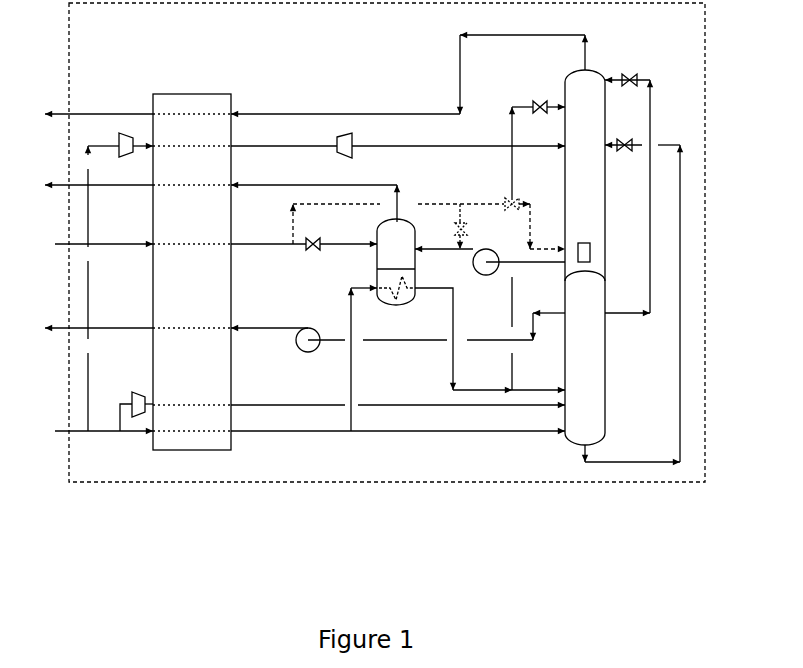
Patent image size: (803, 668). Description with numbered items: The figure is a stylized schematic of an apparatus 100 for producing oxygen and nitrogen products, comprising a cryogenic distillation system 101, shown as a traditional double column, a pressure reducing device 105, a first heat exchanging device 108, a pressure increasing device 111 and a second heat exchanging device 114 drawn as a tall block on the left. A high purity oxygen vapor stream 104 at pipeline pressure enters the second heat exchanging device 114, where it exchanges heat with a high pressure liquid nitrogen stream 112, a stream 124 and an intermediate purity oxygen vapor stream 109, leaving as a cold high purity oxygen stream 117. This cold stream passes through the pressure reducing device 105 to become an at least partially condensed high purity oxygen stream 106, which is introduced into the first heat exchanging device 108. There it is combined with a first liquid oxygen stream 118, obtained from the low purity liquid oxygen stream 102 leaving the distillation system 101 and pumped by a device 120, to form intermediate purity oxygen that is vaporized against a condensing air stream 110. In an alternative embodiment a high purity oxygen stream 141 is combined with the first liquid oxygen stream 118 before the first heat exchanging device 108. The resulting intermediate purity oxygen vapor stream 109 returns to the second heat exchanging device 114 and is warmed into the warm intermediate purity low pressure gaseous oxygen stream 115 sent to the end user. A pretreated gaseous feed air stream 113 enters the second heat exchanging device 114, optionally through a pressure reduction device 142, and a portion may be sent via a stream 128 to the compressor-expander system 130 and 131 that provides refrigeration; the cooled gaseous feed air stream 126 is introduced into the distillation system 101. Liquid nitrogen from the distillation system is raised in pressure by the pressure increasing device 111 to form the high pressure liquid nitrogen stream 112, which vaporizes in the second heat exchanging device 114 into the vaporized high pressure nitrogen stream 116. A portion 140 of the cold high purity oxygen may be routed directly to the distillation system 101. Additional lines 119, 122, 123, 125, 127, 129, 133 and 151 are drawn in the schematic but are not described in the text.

The apparatus 100 is at (72, 80).
The cryogenic distillation system 101 is at (605, 352).
The low purity liquid oxygen stream 102 is at (525, 255).
The high purity oxygen vapor stream 104 is at (87, 244).
The pressure reducing device 105 is at (312, 236).
The at least partially condensed high purity oxygen stream 106 is at (348, 237).
The first heat exchanging device 108 is at (405, 225).
The intermediate purity oxygen vapor stream 109 is at (314, 195).
The condensing air stream 110 is at (365, 352).
The pressure increasing device 111 is at (308, 352).
The high pressure liquid nitrogen stream 112 is at (269, 321).
The gaseous feed air stream 113 is at (91, 431).
The second heat exchanging device 114 is at (192, 284).
The warm intermediate purity low pressure gaseous oxygen stream 115 is at (87, 185).
The vaporized high pressure nitrogen stream 116 is at (87, 328).
The cold high purity oxygen stream 117 is at (367, 224).
The first liquid oxygen stream 118 is at (444, 260).
The separator liquid stream 119 is at (490, 333).
The pump device 120 is at (485, 270).
The column bottoms stream 122 is at (632, 300).
The column side stream 123 is at (493, 207).
The stream 124 is at (408, 74).
The product stream 125 is at (87, 113).
The cooled gaseous feed air stream 126 is at (101, 300).
The column feed stream 127 is at (398, 423).
The stream 128 is at (112, 417).
The compressed stream 129 is at (458, 150).
The compressor-expander 130 is at (125, 145).
The compressor-expander 131 is at (345, 146).
The heat exchanger outlet stream 133 is at (284, 138).
The portion of the high purity oxygen stream 140 is at (526, 206).
The high purity oxygen stream 141 is at (459, 208).
The pressure reduction device 142 is at (130, 400).
The column feed stream 151 is at (398, 394).